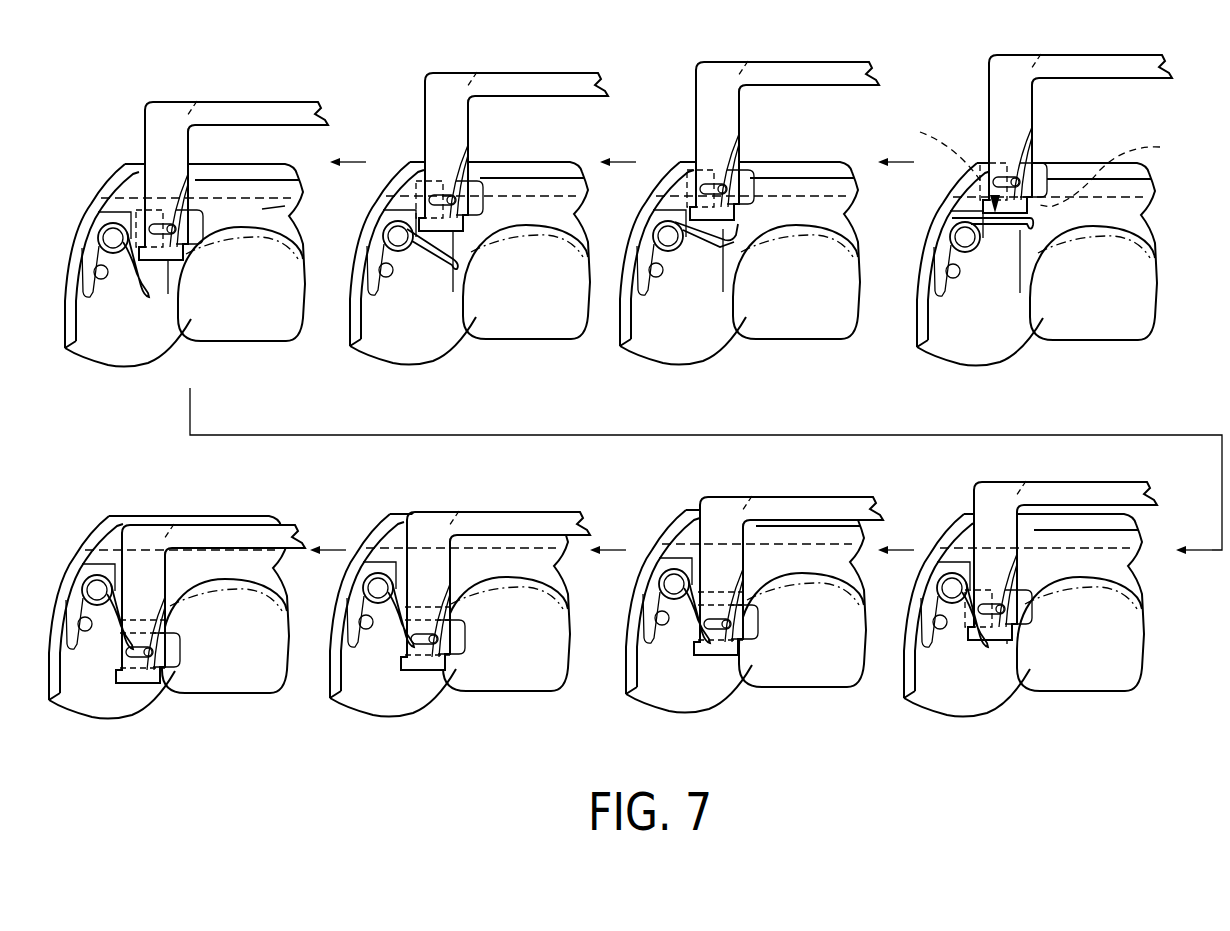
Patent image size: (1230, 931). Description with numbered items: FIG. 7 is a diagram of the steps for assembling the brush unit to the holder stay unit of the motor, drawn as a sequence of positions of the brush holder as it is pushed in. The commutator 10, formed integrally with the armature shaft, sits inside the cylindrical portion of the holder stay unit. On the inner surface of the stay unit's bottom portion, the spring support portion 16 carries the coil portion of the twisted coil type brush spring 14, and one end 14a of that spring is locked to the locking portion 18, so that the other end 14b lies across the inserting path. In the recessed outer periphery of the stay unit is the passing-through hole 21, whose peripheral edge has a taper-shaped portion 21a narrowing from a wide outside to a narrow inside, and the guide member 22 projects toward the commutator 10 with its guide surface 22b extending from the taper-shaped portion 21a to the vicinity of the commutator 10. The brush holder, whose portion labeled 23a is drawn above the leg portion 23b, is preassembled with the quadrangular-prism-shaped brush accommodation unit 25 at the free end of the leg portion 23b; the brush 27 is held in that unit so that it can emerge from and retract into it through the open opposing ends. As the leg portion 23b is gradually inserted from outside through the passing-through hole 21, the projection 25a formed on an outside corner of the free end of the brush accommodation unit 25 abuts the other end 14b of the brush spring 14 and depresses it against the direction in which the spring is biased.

The commutator 10 is at (1030, 325).
The second twisted coil type brush spring 14 is at (917, 258).
The end of brush spring 14a is at (922, 295).
The other end of brush spring 14b is at (440, 262).
The second spring support portion 16 is at (962, 232).
The second locking portion 18 is at (945, 272).
The passing-through hole 21 is at (943, 164).
The taper-shaped portion 21a is at (1124, 172).
The guide member 22 is at (1128, 220).
The guide surface 22b is at (1020, 292).
The carriage bar 23a is at (1125, 62).
The leg portion 23b is at (989, 80).
The brush accommodation unit 25 is at (993, 178).
The projection 25a is at (266, 209).
The brush 27 is at (1033, 167).